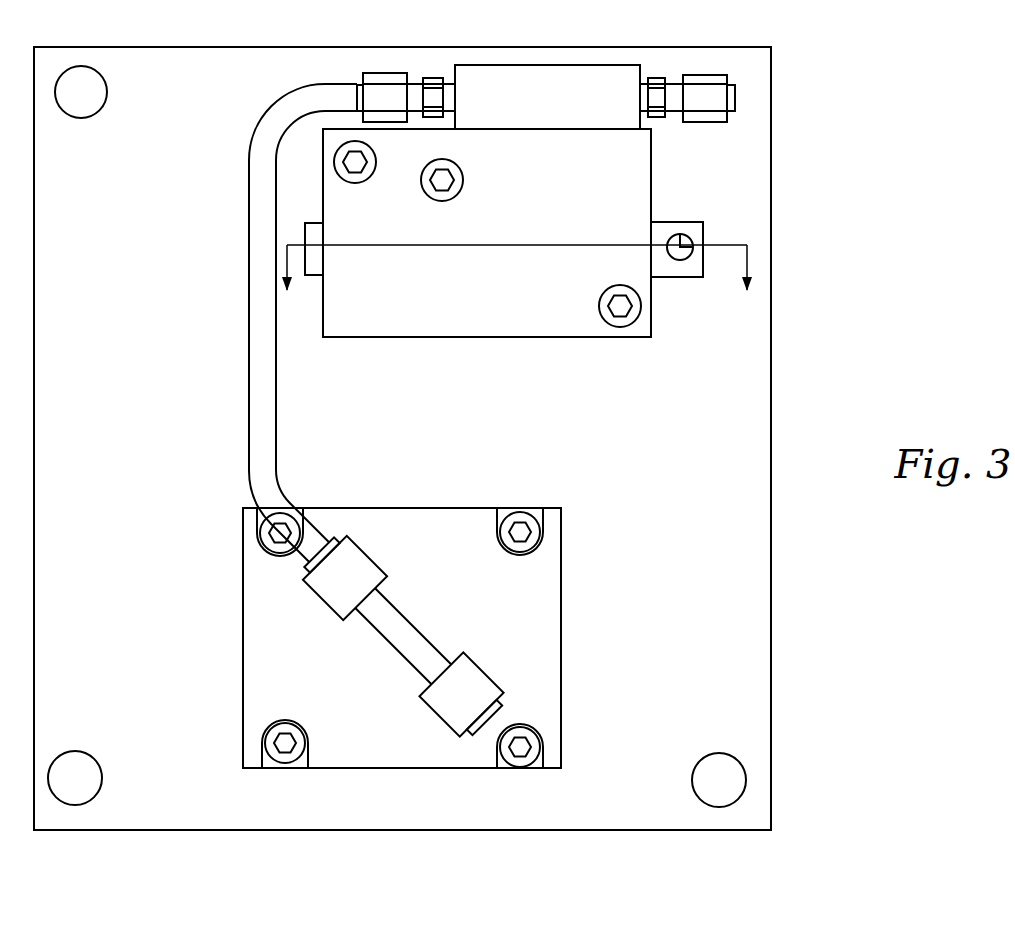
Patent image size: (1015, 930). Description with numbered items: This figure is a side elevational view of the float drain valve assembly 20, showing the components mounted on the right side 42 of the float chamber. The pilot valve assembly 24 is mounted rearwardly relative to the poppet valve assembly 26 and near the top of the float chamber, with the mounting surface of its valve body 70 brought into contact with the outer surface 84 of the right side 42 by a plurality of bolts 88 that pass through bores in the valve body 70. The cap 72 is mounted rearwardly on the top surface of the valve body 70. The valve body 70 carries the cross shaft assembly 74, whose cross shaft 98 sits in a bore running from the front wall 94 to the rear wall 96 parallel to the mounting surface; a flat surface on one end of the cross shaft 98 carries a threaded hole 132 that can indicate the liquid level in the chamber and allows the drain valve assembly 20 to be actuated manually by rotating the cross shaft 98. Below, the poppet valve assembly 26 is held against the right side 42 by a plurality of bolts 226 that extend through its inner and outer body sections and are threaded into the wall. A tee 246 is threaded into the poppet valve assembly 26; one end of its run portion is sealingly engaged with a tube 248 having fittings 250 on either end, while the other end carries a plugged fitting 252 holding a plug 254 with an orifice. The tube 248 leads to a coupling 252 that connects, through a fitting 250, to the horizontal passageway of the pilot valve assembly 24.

The drain valve assembly 20 is at (866, 155).
The pilot valve assembly 24 is at (686, 198).
The poppet valve assembly 26 is at (590, 627).
The right side 42 is at (84, 430).
The valve body 70 is at (516, 325).
The cap 72 is at (553, 66).
The cross shaft assembly 74 is at (699, 304).
The outer surface 84 is at (674, 446).
The bolts 88 is at (362, 158).
The front wall 94 is at (322, 316).
The rear wall 96 is at (652, 150).
The cross shaft 98 is at (670, 230).
The threaded hole 132 is at (712, 245).
The bolts 226 is at (520, 525).
The tee 246 is at (413, 630).
The tube 248 is at (282, 111).
The fittings 250 is at (433, 78).
The plugged fitting 252 is at (383, 74).
The plug 254 is at (500, 711).